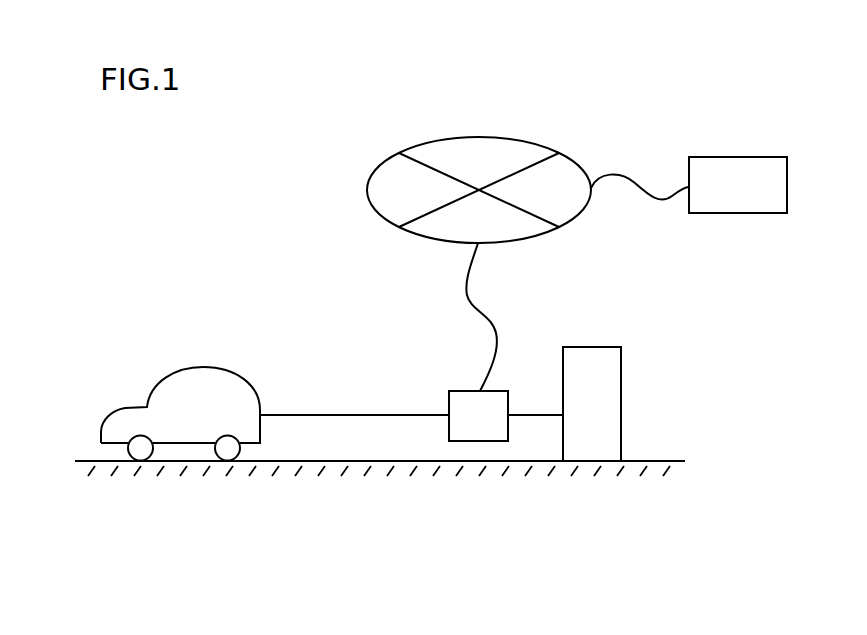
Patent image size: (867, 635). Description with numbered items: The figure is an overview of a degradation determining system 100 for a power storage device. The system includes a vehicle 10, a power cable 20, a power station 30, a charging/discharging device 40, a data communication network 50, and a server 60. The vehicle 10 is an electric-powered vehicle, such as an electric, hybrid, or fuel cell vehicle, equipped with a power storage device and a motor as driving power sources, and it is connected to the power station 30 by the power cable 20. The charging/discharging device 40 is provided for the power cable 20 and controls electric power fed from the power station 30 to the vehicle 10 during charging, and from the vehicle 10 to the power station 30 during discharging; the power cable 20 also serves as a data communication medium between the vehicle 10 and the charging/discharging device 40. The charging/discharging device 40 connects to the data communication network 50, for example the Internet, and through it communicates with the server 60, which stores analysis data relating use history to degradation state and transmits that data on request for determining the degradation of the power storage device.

The degradation determining system 100 is at (132, 164).
The vehicle 10 is at (207, 366).
The power cable 20 is at (309, 413).
The power station 30 is at (592, 347).
The charging/discharging device 40 is at (468, 391).
The data communication network 50 is at (482, 137).
The server 60 is at (728, 157).